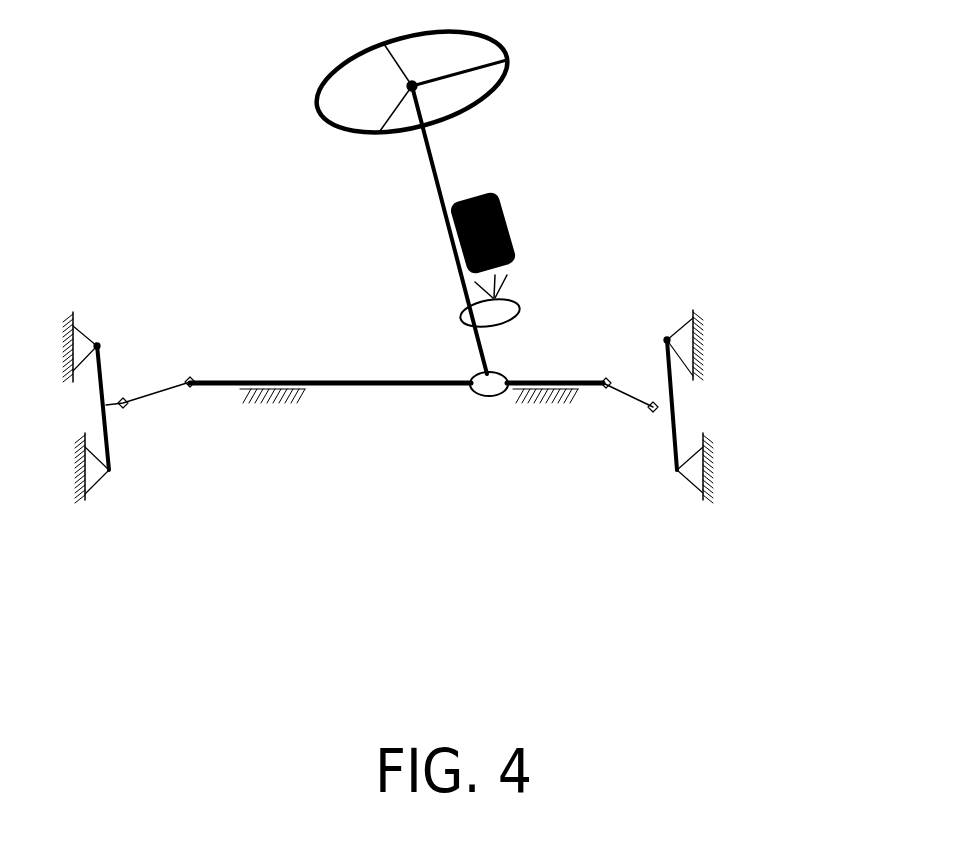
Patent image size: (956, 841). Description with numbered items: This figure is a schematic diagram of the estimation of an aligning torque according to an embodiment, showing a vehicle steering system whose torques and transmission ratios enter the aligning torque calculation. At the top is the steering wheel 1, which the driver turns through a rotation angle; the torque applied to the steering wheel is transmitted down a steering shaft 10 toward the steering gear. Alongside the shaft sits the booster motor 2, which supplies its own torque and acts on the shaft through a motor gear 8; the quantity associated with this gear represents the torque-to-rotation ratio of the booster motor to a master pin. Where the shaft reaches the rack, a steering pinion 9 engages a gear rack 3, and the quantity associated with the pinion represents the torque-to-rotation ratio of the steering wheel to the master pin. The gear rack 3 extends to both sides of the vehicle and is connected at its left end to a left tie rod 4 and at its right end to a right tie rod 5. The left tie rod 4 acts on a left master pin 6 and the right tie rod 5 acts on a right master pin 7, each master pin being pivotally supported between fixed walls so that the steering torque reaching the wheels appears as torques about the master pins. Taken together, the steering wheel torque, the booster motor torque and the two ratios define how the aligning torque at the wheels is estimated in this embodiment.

The steering wheel 1 is at (367, 81).
The steering shaft (M_L steering torque) 10 is at (402, 143).
The booster motor (M_m motor torque) 2 is at (507, 287).
The motor gear (i_m motor gear ratio) 8 is at (476, 315).
The steering pinion (i_s steering gear ratio) 9 is at (489, 399).
The gear rack 3 is at (396, 372).
The left tie rod 4 is at (174, 404).
The right tie rod 5 is at (598, 408).
The left master pin (M_Lr) 6 is at (83, 372).
The right master pin (M_Ll) 7 is at (655, 374).